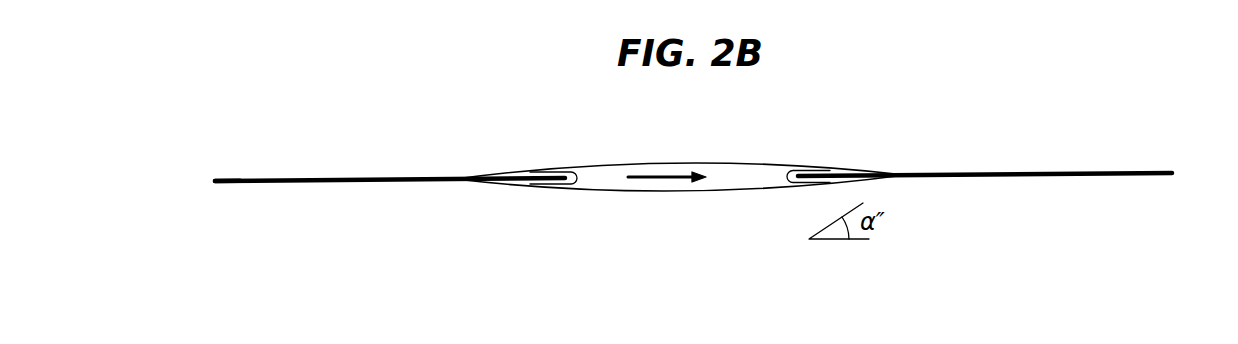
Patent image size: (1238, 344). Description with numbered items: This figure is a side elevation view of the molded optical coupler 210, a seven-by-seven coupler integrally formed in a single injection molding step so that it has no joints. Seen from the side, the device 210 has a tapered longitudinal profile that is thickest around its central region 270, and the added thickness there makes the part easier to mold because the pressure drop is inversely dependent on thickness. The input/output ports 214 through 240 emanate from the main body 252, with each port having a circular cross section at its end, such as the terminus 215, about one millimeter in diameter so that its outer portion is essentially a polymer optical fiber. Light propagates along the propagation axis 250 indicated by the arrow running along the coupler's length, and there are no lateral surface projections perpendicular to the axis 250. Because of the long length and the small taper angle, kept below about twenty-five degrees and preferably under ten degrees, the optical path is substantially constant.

The coupler 210 is at (722, 136).
The input/output port 214 is at (259, 178).
The terminus 215 is at (215, 181).
The input/output port 240 is at (1088, 173).
The propagation axis 250 is at (638, 172).
The main body 252 is at (585, 187).
The central region 270 is at (700, 192).